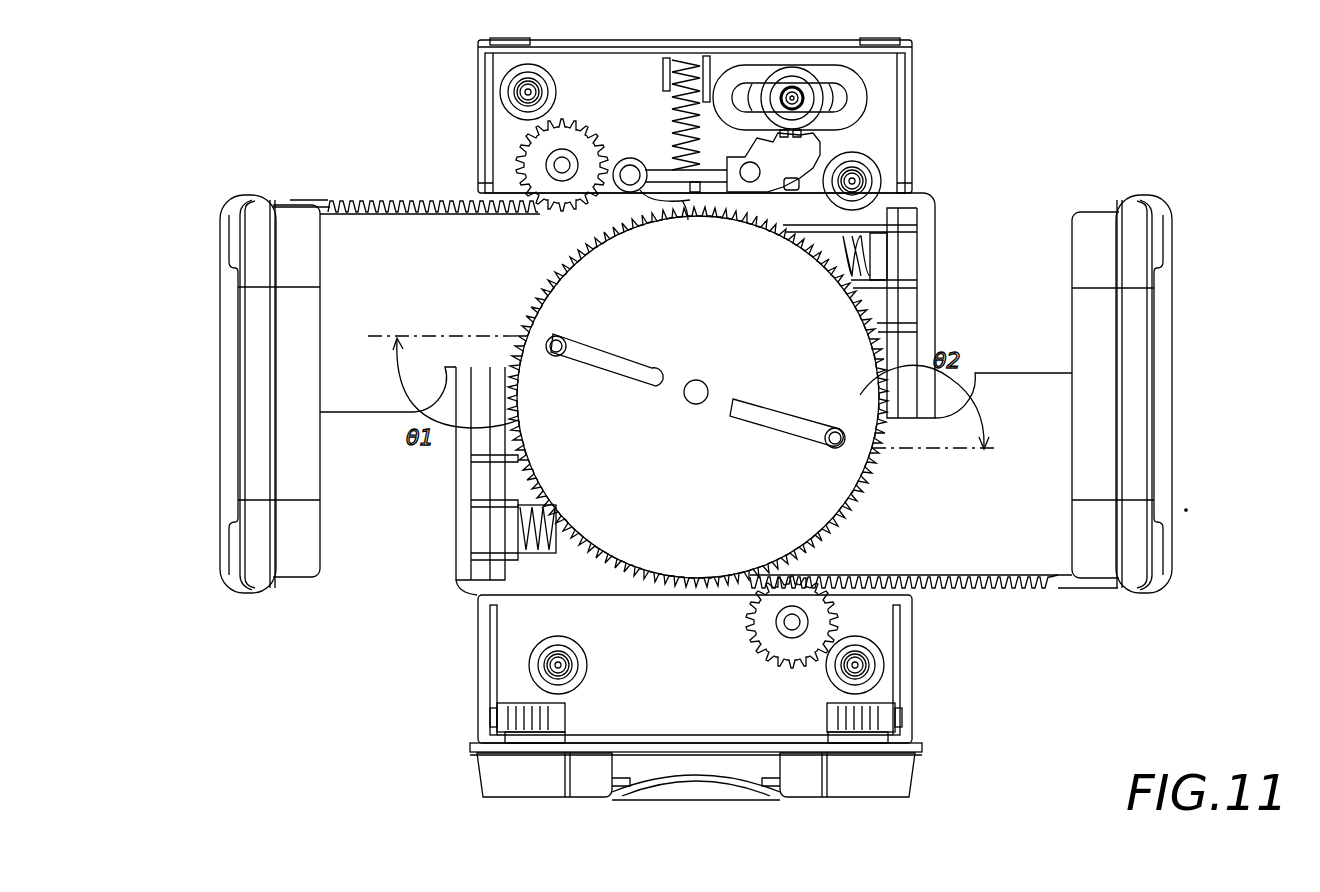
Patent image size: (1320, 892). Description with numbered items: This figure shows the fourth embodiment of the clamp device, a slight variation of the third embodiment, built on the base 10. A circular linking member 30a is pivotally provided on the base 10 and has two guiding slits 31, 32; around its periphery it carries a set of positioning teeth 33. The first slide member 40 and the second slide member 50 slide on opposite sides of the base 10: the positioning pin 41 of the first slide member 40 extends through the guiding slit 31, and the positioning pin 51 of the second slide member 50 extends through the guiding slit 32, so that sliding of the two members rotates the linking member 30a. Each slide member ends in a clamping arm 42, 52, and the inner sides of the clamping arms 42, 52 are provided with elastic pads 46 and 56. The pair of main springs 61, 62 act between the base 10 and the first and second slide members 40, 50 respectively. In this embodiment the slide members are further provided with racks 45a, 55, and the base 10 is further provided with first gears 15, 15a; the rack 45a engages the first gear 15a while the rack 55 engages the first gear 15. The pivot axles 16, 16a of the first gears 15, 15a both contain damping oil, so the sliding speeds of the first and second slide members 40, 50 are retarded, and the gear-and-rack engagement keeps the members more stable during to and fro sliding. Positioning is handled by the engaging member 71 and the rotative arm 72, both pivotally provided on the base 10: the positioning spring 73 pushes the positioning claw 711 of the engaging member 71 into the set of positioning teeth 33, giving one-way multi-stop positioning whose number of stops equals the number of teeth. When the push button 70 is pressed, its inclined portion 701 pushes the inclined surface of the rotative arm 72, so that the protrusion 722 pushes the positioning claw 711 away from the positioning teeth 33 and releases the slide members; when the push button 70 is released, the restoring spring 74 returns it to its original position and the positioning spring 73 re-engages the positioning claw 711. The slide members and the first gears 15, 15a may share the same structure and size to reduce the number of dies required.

The base 10 is at (912, 683).
The first gear 15 is at (748, 640).
The first gear 15a is at (520, 165).
The pivot axle 16 is at (770, 643).
The pivot axle 16a is at (516, 163).
The linking member 30a is at (640, 419).
The guiding slit 31 is at (604, 365).
The guiding slit 32 is at (787, 420).
The set of positioning teeth 33 is at (690, 588).
The first slide member 40 is at (236, 389).
The positioning pin 41 is at (563, 343).
The clamping arm 42 is at (268, 360).
The rack 45a is at (352, 200).
The elastic pad 46 is at (280, 548).
The second slide member 50 is at (1159, 394).
The positioning pin 51 is at (833, 447).
The clamping arm 52 is at (1140, 397).
The rack 55 is at (850, 578).
The elastic pad 56 is at (1100, 255).
The main spring 61 is at (870, 262).
The main spring 62 is at (540, 520).
The push button 70 is at (833, 92).
The engaging member 71 is at (686, 181).
The rotative arm 72 is at (840, 178).
The positioning spring 73 is at (668, 80).
The restoring spring 74 is at (806, 110).
The inclined portion 701 is at (795, 178).
The positioning claw 711 is at (680, 205).
The protrusion 722 is at (717, 172).